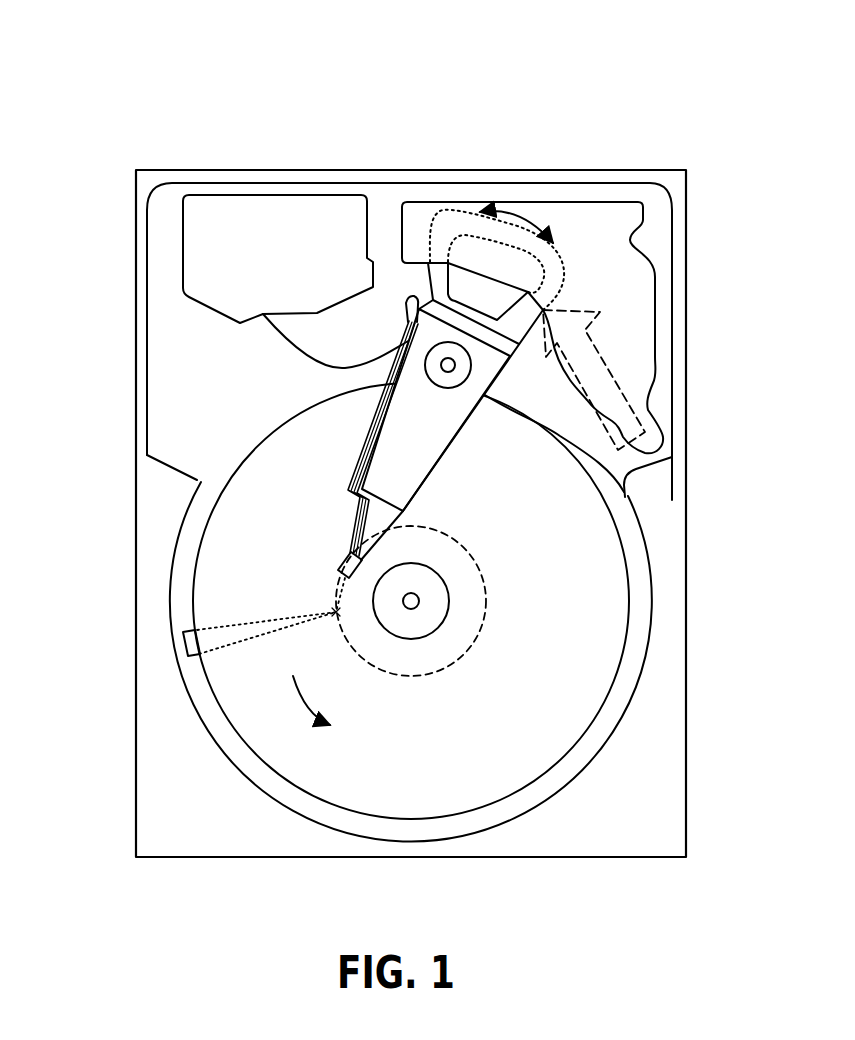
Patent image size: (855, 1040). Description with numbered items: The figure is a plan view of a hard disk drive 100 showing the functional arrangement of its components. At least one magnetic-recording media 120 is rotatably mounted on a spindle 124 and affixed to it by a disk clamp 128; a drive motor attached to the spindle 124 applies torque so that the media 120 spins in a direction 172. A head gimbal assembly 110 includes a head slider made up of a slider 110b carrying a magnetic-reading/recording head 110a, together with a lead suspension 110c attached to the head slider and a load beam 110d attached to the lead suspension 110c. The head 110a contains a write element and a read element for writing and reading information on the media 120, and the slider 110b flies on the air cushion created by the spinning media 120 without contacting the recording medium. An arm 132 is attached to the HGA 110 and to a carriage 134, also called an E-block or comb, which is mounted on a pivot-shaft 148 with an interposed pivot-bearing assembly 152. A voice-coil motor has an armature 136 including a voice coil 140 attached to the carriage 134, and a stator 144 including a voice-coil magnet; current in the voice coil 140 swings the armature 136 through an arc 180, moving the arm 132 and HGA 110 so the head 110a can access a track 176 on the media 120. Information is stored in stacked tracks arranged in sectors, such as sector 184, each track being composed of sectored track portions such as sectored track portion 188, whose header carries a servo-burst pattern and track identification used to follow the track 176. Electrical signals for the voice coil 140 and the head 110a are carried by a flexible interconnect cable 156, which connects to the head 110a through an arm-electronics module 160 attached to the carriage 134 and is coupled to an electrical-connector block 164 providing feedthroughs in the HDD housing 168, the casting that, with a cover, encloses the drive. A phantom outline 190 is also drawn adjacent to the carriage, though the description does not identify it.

The hard disk drive 100 is at (76, 68).
The head gimbal assembly 110 is at (68, 440).
The magnetic-reading/recording head 110a is at (343, 566).
The slider 110b is at (358, 542).
The lead suspension 110c is at (362, 507).
The load beam 110d is at (353, 492).
The magnetic-recording media 120 is at (573, 566).
The spindle 124 is at (425, 603).
The disk clamp 128 is at (438, 622).
The arm 132 is at (407, 463).
The carriage 134 is at (462, 393).
The armature 136 is at (430, 287).
The voice coil 140 is at (443, 270).
The stator 144 is at (628, 280).
The pivot-shaft 148 is at (450, 364).
The pivot-bearing assembly 152 is at (457, 373).
The flexible interconnect cable 156 is at (292, 345).
The arm-electronics module 160 is at (407, 333).
The electrical-connector block 164 is at (205, 257).
The HDD housing 168 is at (668, 180).
The direction 172 is at (338, 700).
The track 176 is at (483, 570).
The arc 180 is at (513, 207).
The sector 184 is at (182, 643).
The sectored track portion 188 is at (330, 609).
The flex cable (phantom) 190 is at (620, 375).